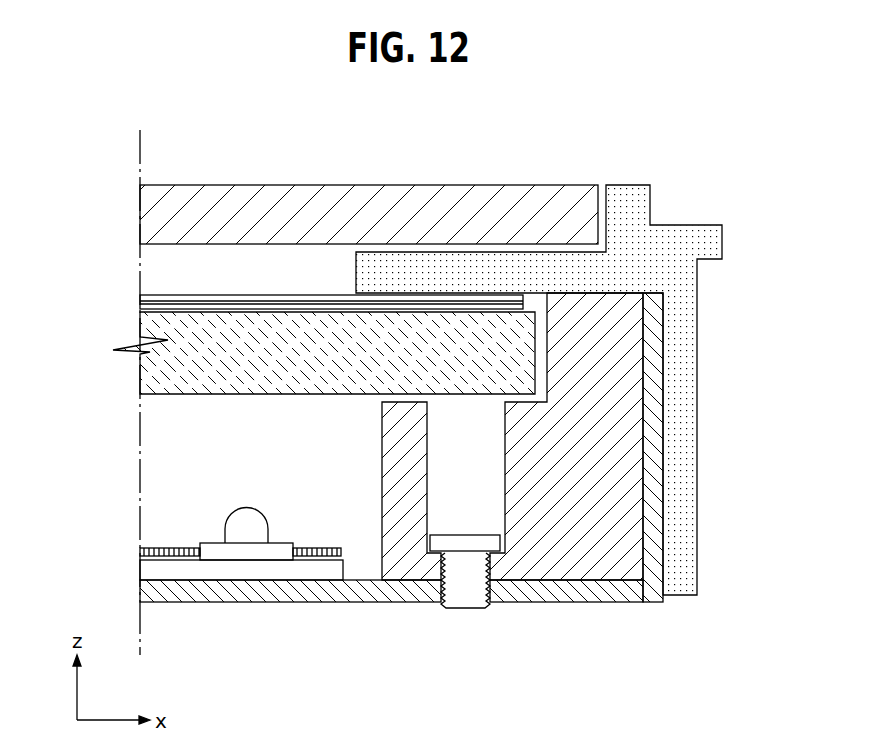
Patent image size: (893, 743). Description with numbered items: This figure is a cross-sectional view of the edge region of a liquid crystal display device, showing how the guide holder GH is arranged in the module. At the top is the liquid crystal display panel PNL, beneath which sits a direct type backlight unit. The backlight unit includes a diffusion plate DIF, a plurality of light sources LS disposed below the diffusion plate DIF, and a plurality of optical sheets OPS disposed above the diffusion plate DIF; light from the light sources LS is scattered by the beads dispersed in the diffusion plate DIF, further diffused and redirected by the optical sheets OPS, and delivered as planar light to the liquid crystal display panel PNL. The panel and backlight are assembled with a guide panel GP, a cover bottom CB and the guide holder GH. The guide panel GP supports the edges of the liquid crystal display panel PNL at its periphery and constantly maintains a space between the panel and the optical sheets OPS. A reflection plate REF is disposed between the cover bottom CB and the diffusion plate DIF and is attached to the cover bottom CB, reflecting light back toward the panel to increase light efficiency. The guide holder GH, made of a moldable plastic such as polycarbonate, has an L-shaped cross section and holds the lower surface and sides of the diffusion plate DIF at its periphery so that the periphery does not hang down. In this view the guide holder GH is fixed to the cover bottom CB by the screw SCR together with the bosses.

The liquid crystal display panel PNL is at (150, 213).
The optical sheets OPS is at (130, 295).
The diffusion plate DIF is at (152, 366).
The reflection plate REF is at (148, 550).
The light sources LS is at (243, 550).
The cover bottom CB is at (308, 590).
The screw SCR is at (465, 588).
The guide holder GH is at (560, 540).
The guide panel GP is at (682, 440).